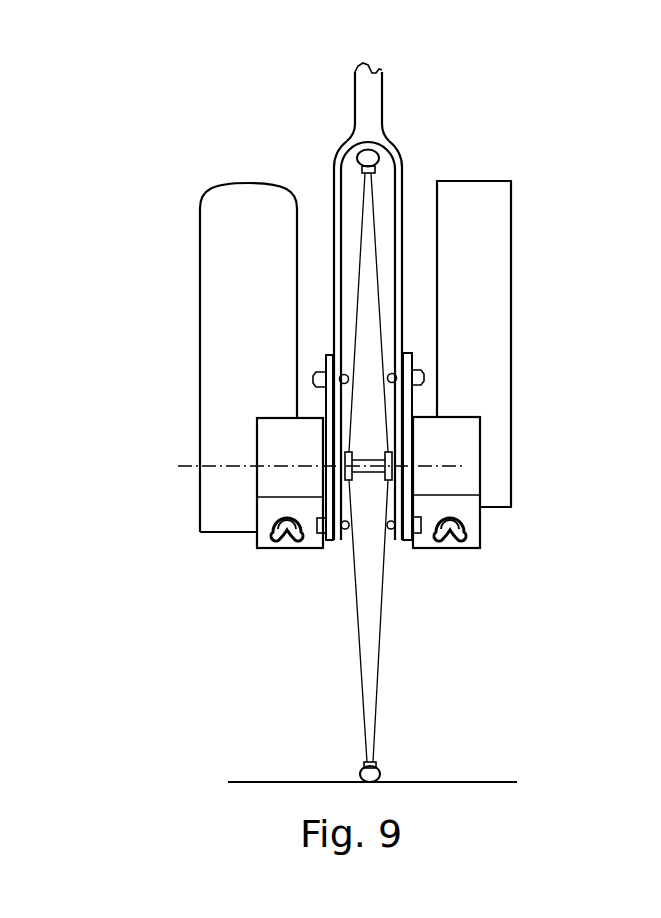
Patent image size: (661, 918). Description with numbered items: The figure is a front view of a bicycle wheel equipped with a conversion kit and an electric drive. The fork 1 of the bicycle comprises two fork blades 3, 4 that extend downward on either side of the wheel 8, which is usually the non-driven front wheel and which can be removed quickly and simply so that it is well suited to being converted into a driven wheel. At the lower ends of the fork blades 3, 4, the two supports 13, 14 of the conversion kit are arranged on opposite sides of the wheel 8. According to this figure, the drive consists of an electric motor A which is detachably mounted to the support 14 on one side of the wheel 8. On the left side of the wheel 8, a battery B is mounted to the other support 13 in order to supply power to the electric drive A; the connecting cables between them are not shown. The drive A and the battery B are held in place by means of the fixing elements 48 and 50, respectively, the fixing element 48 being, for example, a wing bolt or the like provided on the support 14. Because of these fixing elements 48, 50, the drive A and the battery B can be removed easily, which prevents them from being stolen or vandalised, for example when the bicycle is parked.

The fork 1 is at (308, 123).
The fork blade 3 is at (402, 168).
The fork blade 4 is at (340, 186).
The wheel 8 is at (388, 687).
The support 13 is at (430, 558).
The support 14 is at (308, 565).
The fixing element 48 is at (274, 538).
The fixing element 50 is at (463, 540).
The drive A is at (238, 324).
The battery B is at (481, 238).